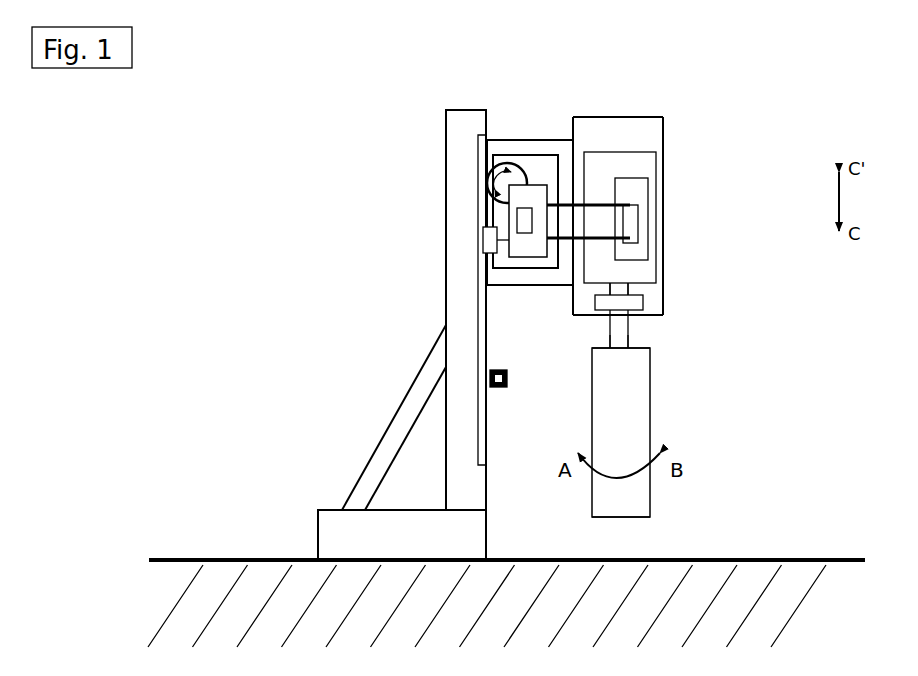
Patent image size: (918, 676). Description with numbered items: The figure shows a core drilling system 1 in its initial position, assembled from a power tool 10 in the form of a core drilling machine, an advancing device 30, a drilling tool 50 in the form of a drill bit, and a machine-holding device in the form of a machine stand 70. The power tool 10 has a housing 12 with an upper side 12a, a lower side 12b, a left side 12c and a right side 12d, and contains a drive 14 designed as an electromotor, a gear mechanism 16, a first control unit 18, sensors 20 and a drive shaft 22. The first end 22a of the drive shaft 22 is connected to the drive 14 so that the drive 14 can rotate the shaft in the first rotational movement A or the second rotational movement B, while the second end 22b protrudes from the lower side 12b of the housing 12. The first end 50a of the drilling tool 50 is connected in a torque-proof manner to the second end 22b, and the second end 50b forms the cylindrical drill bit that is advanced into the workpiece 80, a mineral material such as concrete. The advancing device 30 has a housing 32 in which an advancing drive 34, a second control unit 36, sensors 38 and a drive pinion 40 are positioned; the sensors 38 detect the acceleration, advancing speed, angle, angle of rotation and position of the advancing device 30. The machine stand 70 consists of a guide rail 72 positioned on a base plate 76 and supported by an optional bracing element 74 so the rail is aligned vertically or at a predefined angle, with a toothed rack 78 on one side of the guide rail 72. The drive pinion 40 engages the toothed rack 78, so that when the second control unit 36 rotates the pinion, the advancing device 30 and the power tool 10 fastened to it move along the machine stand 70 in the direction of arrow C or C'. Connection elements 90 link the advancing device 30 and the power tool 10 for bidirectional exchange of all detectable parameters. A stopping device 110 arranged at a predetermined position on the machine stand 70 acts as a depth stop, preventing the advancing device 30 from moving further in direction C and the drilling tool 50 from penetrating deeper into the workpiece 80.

The core drilling system 1 is at (262, 130).
The power tool 10 is at (649, 194).
The housing 12 is at (649, 194).
The upper side 12a is at (612, 123).
The lower side 12b is at (664, 315).
The left side 12c is at (572, 268).
The right side 12d is at (665, 235).
The drive 14 is at (638, 160).
The gear mechanism 16 is at (627, 299).
The first control unit 18 is at (641, 186).
The sensors 20 is at (640, 240).
The drive shaft 22 is at (653, 337).
The first end 22a is at (629, 287).
The second end 22b is at (623, 348).
The advancing device 30 is at (473, 181).
The housing 32 is at (553, 140).
The advancing drive 34 is at (518, 154).
The second control unit 36 is at (520, 198).
The sensors 38 is at (523, 233).
The drive pinion 40 is at (487, 174).
The drilling tool 50 is at (634, 445).
The first end 50a is at (607, 349).
The second end 50b is at (648, 516).
The machine stand 70 is at (396, 335).
The guide rail 72 is at (458, 305).
The bracing element 74 is at (388, 440).
The base plate 76 is at (332, 527).
The toothed rack 78 is at (488, 438).
The workpiece 80 is at (506, 603).
The connection elements 90 is at (616, 236).
The stopping device 110 is at (504, 389).